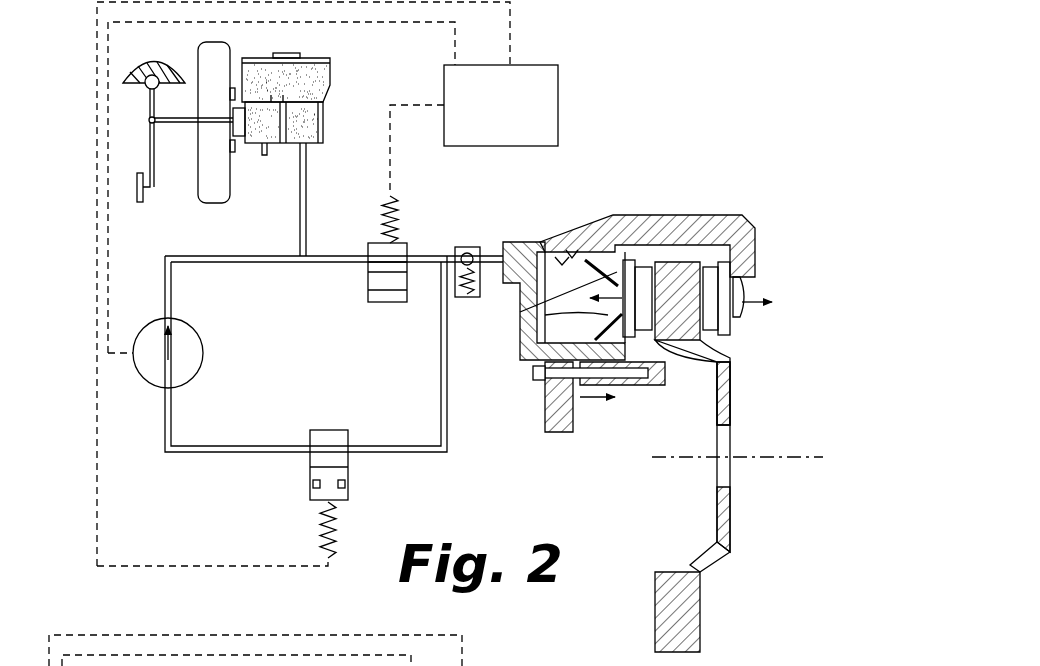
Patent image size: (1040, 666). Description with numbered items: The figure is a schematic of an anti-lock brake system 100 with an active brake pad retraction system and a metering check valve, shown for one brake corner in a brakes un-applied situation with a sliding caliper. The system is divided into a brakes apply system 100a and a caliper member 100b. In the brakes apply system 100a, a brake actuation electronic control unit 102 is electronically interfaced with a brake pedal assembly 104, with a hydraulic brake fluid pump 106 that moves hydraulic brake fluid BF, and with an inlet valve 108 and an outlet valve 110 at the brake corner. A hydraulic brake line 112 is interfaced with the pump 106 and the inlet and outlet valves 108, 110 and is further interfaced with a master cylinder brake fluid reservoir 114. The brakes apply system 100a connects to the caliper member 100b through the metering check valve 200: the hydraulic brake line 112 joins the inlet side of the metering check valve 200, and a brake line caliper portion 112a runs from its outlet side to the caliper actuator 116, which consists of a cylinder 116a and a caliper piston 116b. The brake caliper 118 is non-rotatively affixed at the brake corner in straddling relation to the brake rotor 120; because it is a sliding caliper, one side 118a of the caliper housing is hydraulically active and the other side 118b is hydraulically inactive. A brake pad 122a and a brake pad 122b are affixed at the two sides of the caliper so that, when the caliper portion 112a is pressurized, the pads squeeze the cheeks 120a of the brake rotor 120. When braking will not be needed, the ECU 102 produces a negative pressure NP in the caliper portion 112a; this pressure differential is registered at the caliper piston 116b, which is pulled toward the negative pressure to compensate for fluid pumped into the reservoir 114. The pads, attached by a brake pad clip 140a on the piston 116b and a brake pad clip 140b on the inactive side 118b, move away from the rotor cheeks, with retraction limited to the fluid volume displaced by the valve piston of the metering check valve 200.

The anti-lock brake system 100 is at (717, 112).
The brakes apply system 100a is at (577, 130).
The caliper member 100b is at (730, 198).
The brake actuation electronic control unit 102 is at (545, 65).
The brake pedal assembly 104 is at (143, 145).
The hydraulic brake fluid pump 106 is at (205, 342).
The inlet valve 108 is at (410, 245).
The outlet valve 110 is at (350, 434).
The hydraulic brake line 112 is at (298, 207).
The brake line caliper portion 112a is at (497, 257).
The master cylinder brake fluid reservoir 114 is at (332, 85).
The caliper actuator 116 is at (515, 362).
The cylinder 116a is at (577, 243).
The caliper piston 116b is at (568, 265).
The brake caliper 118 is at (755, 250).
The hydraulically active side of caliper housing 118a is at (542, 243).
The hydraulically inactive side of caliper housing 118b is at (747, 220).
The brake rotor 120 is at (732, 398).
The cheeks of the brake rotor 120a is at (645, 287).
The brake pad 122a is at (658, 385).
The brake pad 122b is at (708, 333).
The brake pad clip 140a is at (555, 298).
The brake pad clip 140b is at (740, 310).
The metering check valve 200 is at (470, 302).
The hydraulic brake fluid BF is at (318, 78).
The negative pressure NP is at (208, 445).